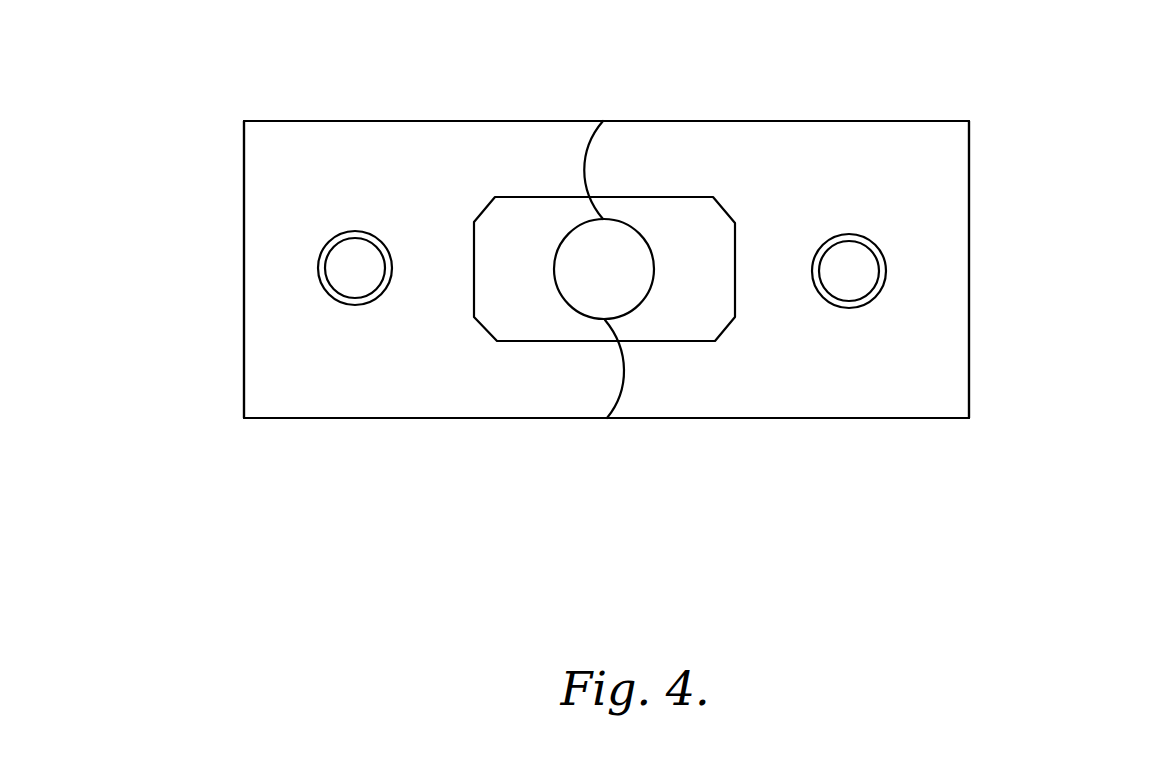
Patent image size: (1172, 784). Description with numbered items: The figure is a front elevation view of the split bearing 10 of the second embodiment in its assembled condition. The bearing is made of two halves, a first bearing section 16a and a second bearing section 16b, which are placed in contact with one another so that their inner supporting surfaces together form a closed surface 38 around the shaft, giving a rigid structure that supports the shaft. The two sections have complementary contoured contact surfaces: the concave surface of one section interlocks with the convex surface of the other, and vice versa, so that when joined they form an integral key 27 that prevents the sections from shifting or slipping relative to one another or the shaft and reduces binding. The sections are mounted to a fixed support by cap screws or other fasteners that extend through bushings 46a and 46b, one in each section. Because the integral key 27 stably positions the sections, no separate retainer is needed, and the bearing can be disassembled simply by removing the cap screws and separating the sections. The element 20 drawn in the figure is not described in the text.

The split bearing 10 is at (447, 467).
The first bearing section 16a is at (243, 165).
The second bearing section 16b is at (975, 235).
The octagonal recess 20 is at (698, 343).
The integral key 27 is at (573, 145).
The closed surface 38 is at (554, 270).
The bushing 46a is at (318, 272).
The bushing 46b is at (886, 275).